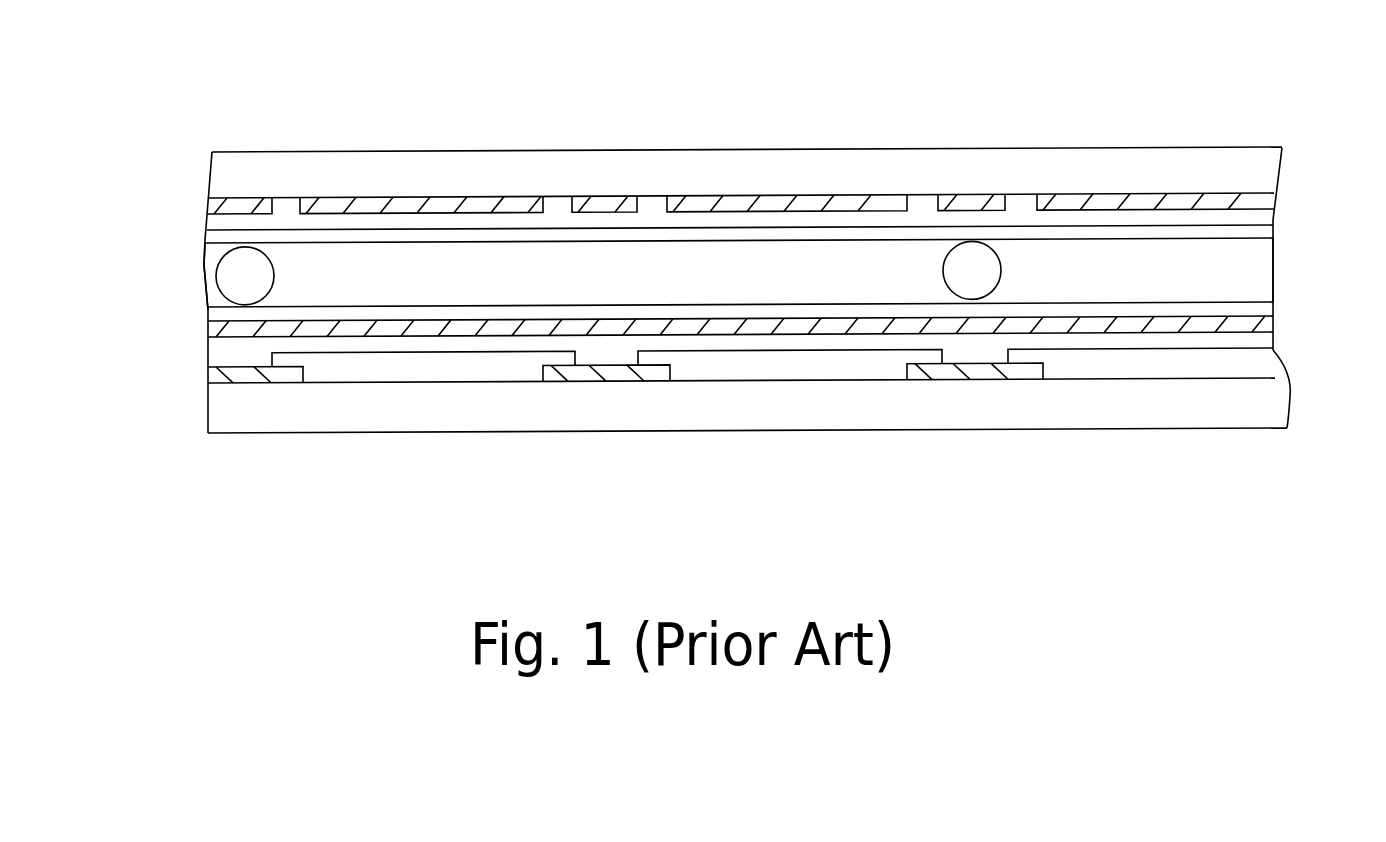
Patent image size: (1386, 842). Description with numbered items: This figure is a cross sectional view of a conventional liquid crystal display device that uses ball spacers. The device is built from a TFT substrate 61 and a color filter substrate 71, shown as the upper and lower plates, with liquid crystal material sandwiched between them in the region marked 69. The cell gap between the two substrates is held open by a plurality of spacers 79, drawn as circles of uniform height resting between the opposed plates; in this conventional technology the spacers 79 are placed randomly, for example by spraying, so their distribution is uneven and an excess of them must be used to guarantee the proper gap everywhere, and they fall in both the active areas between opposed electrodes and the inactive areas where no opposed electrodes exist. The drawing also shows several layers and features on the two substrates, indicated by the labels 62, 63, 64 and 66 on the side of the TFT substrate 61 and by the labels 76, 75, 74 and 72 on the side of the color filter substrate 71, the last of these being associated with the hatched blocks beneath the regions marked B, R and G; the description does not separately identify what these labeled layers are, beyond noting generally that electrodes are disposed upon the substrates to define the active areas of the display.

The TFT substrate 61 is at (867, 176).
The color filter layer 62 is at (425, 208).
The black matrix 63 is at (607, 209).
The common electrode 64 is at (213, 223).
The upper alignment layer 66 is at (210, 243).
The spacers 79 is at (232, 280).
The liquid crystal layer 69 is at (1263, 276).
The lower alignment layer 76 is at (208, 319).
The passivation layer 75 is at (208, 334).
The pixel electrode 74 is at (213, 356).
The thin film transistor 72 is at (597, 385).
The color filter substrate 71 is at (213, 409).